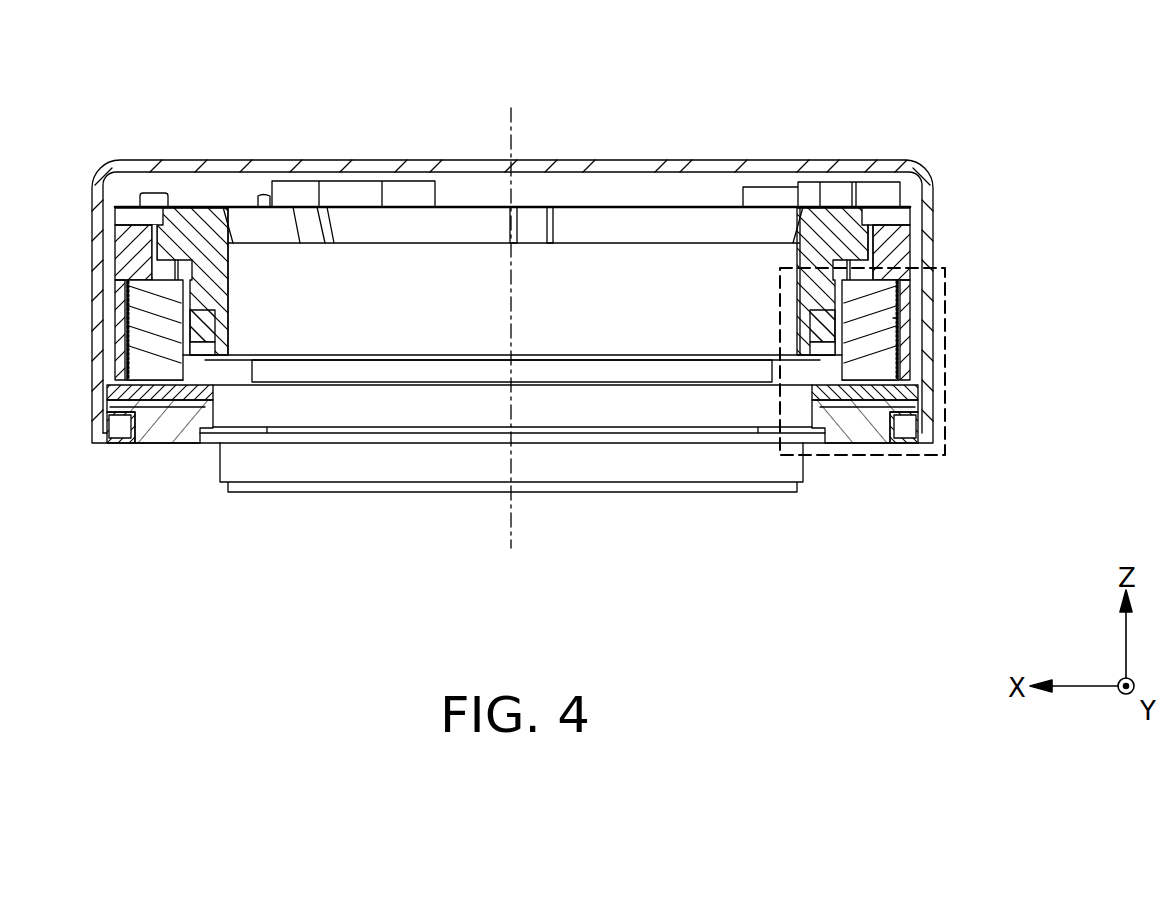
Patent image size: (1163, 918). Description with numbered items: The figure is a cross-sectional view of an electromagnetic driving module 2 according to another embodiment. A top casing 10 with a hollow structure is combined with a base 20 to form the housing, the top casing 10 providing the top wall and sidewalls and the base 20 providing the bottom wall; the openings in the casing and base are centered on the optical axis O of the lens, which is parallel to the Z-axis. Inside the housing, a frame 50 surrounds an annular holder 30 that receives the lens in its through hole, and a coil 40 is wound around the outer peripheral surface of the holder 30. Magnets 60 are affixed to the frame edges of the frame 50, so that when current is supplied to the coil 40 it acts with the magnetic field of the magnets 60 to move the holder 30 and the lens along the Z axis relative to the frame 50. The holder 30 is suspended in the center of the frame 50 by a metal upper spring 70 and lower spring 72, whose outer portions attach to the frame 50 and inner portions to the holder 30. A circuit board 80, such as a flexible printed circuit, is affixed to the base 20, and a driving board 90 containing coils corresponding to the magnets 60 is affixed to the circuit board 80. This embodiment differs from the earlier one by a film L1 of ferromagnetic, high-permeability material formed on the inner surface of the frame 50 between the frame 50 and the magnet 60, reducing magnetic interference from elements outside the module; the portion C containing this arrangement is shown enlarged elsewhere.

The electromagnetic driving module 2 is at (312, 158).
The top casing 10 is at (865, 165).
The base 20 is at (169, 428).
The holder 30 is at (198, 238).
The coil 40 is at (207, 327).
The frame 50 is at (133, 243).
The magnet 60 is at (153, 322).
The upper spring 70 is at (639, 205).
The lower spring 72 is at (647, 357).
The circuit board 80 is at (118, 440).
The driving board 90 is at (898, 390).
The optical axis O is at (511, 312).
The film L1 is at (893, 318).
The portion C is at (947, 352).